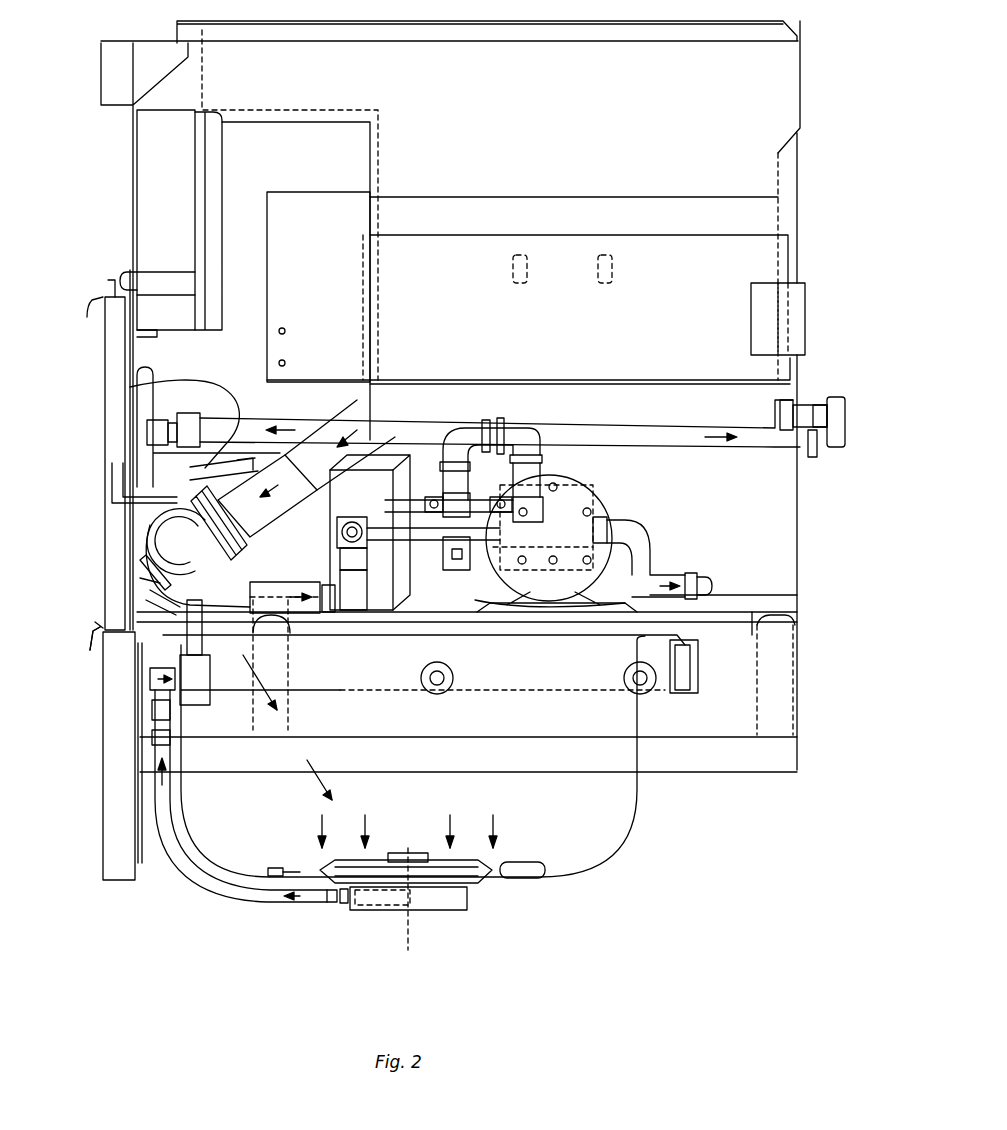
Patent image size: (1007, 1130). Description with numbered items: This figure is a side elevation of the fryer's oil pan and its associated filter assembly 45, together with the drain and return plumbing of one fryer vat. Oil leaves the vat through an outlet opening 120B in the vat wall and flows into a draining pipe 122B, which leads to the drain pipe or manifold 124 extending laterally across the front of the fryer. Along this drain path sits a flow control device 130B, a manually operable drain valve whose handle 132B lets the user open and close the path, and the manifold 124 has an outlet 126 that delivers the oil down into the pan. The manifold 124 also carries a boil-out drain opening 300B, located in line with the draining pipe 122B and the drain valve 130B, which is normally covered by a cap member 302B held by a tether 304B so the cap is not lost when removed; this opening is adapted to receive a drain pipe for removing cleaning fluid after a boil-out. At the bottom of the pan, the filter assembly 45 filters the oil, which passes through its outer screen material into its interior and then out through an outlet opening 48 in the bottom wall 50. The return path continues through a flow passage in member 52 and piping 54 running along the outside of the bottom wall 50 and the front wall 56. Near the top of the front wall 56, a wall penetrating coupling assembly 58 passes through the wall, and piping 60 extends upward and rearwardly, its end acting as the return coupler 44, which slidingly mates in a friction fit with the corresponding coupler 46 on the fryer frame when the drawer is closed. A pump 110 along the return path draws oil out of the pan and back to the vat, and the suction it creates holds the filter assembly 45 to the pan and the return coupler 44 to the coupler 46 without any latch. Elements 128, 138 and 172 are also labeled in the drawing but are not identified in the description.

The cabinet housing 128 is at (599, 135).
The outlet opening 120B is at (380, 432).
The draining pipe 122B is at (335, 432).
The handle 132B is at (130, 387).
The flow control device 130B is at (272, 502).
The drain pipe/manifold 124 is at (150, 530).
The boil-out drain opening 300B is at (170, 525).
The cap member 302B is at (127, 565).
The tether 304B is at (133, 607).
The outlet 126 is at (125, 580).
The latch hook 172 is at (97, 619).
The coupler 46 is at (290, 582).
The return coupler 44 is at (330, 683).
The pump 110 is at (655, 482).
The pump housing 138 is at (470, 510).
The bottom wall 50 is at (610, 857).
The front wall 56 is at (185, 785).
The piping 54 is at (255, 895).
The wall penetrating coupling assembly 58 is at (150, 680).
The piping 60 is at (180, 655).
The filter assembly 45 is at (545, 851).
The outlet opening 48 is at (408, 950).
The member 52 is at (455, 897).